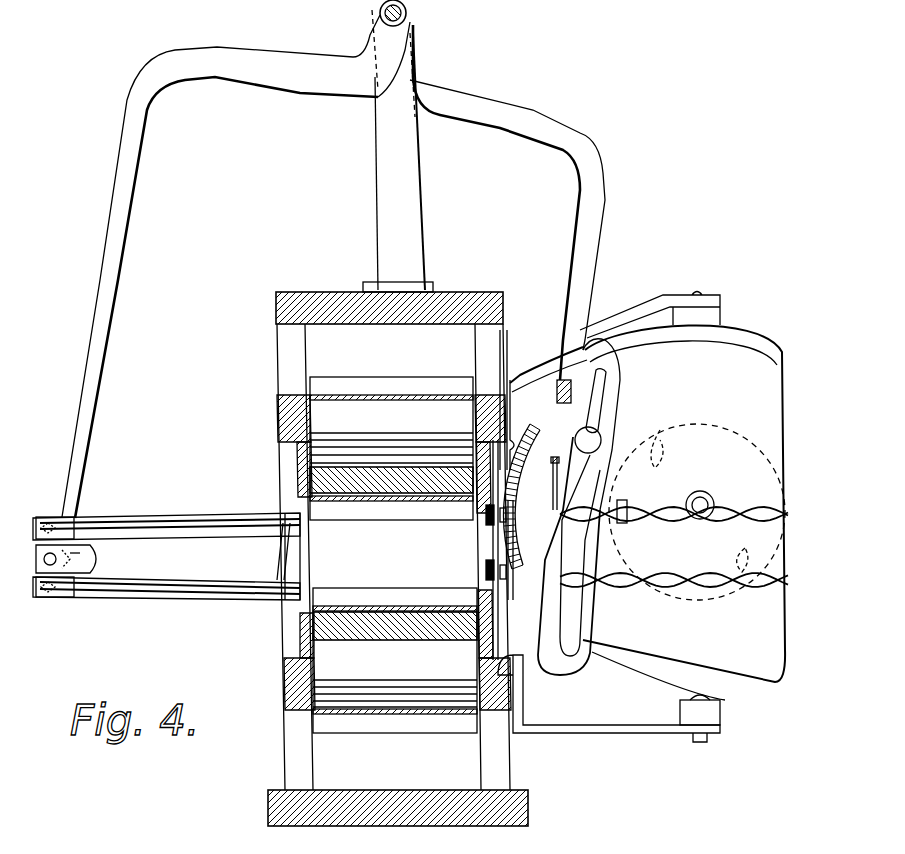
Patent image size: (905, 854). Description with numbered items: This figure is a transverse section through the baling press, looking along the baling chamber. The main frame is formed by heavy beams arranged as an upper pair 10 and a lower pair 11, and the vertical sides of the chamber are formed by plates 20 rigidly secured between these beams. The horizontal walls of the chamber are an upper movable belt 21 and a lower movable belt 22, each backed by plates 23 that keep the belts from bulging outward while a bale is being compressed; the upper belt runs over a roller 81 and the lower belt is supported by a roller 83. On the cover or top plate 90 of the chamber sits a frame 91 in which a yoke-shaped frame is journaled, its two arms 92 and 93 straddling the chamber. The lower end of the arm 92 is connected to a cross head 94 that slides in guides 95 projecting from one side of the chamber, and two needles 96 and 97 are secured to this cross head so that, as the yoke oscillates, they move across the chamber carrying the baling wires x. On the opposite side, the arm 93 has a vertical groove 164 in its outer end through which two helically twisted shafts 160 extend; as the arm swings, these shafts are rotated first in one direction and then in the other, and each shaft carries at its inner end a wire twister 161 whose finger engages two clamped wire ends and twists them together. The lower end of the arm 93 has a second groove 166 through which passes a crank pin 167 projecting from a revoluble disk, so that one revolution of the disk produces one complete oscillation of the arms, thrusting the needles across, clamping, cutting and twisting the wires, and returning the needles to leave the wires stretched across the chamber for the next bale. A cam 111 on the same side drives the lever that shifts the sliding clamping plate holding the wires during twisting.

The upper pair of beams 10 is at (282, 415).
The lower pair of beams 11 is at (292, 680).
The plates 20 is at (297, 466).
The upper movable belt 21 is at (352, 502).
The lower movable belt 22 is at (333, 605).
The backing plates 23 is at (376, 612).
The roller 81 is at (385, 410).
The roller 83 is at (365, 703).
The cover or top plate 90 is at (318, 300).
The frame 91 is at (421, 260).
The arm 92 is at (108, 233).
The arm 93 is at (534, 121).
The cross head 94 is at (55, 547).
The guides 95 is at (130, 518).
The needle 96 is at (147, 592).
The needle 97 is at (177, 532).
The baling wires x is at (78, 552).
The cam 111 is at (703, 425).
The helically twisted shafts 160 is at (690, 575).
The wire twister 161 is at (592, 585).
The vertical groove 164 is at (548, 588).
The second groove 166 is at (606, 380).
The crank pin 167 is at (594, 440).